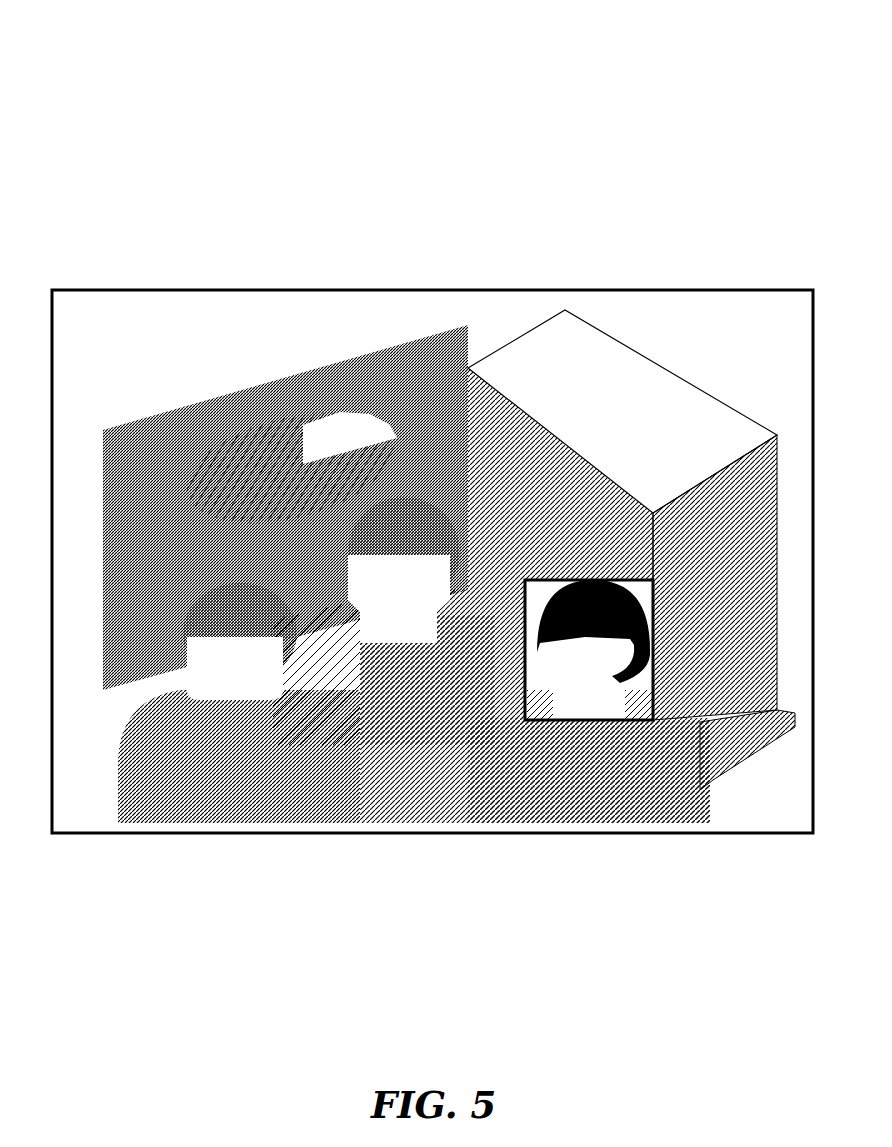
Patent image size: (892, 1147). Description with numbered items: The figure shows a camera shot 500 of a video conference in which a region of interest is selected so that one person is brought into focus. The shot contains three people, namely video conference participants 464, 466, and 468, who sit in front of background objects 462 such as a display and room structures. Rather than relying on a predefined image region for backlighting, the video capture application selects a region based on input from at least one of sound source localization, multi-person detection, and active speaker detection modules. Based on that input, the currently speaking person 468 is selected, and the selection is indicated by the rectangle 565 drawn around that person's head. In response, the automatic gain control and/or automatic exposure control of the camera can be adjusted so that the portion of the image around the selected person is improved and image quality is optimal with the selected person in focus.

The camera shot 500 is at (705, 76).
The background objects 462 is at (497, 316).
The video conference participant 464 is at (208, 580).
The video conference participant 466 is at (405, 496).
The video conference participant 468 is at (589, 558).
The rectangle 565 is at (652, 574).